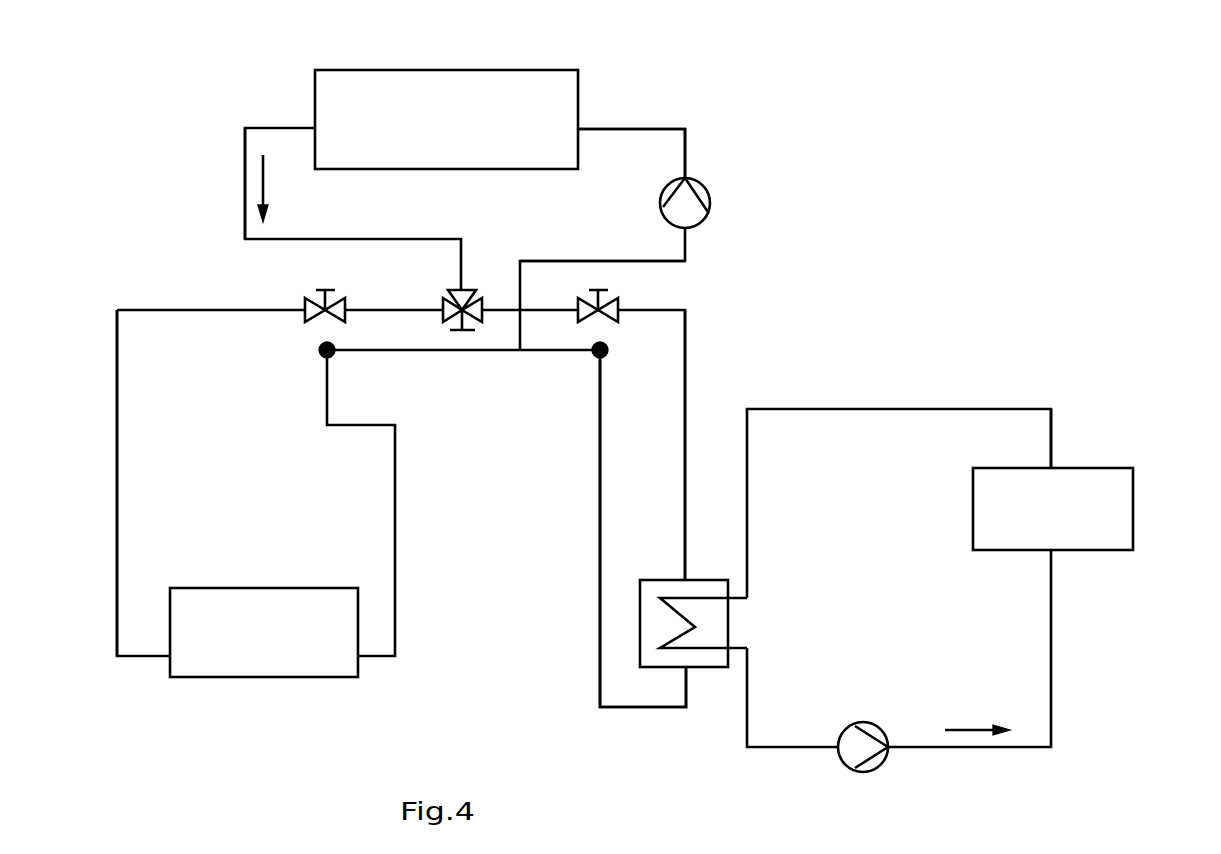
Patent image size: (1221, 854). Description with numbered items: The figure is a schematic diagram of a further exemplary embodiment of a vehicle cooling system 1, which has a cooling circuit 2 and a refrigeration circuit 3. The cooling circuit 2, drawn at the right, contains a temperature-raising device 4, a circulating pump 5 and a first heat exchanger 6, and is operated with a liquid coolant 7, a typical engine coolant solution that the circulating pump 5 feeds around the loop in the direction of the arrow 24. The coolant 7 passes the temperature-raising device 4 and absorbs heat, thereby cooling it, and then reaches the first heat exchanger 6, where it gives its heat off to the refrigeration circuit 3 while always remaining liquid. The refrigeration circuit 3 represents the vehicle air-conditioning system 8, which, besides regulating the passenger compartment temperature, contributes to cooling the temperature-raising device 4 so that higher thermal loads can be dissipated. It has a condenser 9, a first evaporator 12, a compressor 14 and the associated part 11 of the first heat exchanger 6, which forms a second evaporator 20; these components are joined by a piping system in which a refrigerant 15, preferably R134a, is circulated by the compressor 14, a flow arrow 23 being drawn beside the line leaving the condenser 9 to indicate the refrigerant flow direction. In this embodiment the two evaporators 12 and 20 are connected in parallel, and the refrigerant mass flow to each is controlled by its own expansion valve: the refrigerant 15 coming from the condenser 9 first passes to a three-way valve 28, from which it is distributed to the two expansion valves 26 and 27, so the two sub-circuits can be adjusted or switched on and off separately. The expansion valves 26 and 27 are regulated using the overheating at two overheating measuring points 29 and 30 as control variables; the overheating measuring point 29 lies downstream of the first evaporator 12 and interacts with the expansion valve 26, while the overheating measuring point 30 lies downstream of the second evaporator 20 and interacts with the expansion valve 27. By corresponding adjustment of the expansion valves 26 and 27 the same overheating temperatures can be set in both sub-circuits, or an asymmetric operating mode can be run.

The vehicle cooling system 1 is at (903, 250).
The cooling circuit 2 is at (1098, 430).
The refrigeration circuit 3 is at (175, 220).
The temperature-raising device 4 is at (1113, 515).
The circulating pump 5 is at (852, 755).
The first heat exchanger 6 is at (710, 625).
The coolant 7 is at (848, 408).
The air-conditioning system 8 is at (92, 293).
The condenser 9 is at (483, 97).
The associated part of the first heat exchanger 11 is at (662, 680).
The first evaporator 12 is at (265, 648).
The compressor 14 is at (690, 215).
The refrigerant 15 is at (628, 129).
The second evaporator 20 is at (677, 588).
The flow direction 23 is at (267, 173).
The arrow 24 is at (967, 728).
The expansion valve 26 is at (307, 303).
The expansion valve 27 is at (617, 303).
The 3-way valve 28 is at (463, 287).
The overheating measuring point 29 is at (332, 355).
The overheating measuring point 30 is at (593, 357).